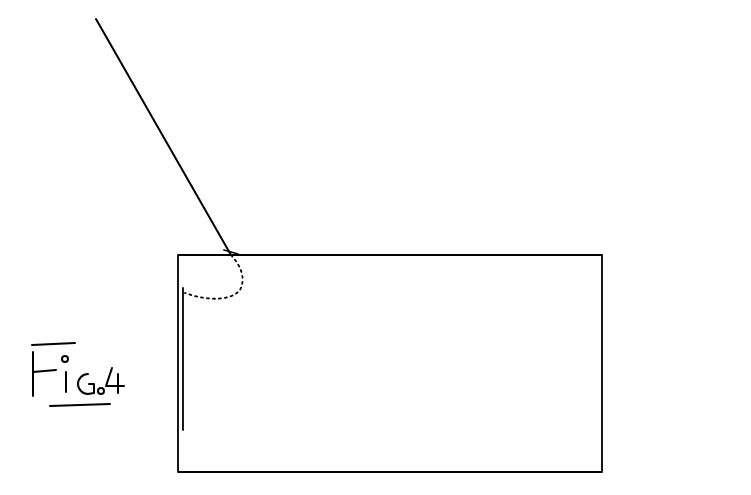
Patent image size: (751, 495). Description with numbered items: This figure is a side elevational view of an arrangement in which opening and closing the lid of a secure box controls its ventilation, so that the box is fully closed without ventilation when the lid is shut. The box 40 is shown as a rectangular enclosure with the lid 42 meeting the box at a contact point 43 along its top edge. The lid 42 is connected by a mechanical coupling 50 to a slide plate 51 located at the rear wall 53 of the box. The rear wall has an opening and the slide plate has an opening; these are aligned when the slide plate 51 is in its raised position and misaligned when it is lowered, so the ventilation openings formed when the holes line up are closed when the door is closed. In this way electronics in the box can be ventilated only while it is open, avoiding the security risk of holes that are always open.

The substrate 40 is at (602, 342).
The lid 42 is at (192, 165).
The incidence point 43 is at (233, 250).
The mechanical coupling 50 is at (240, 293).
The slide plate 51 is at (182, 359).
The rear wall 53 is at (178, 440).